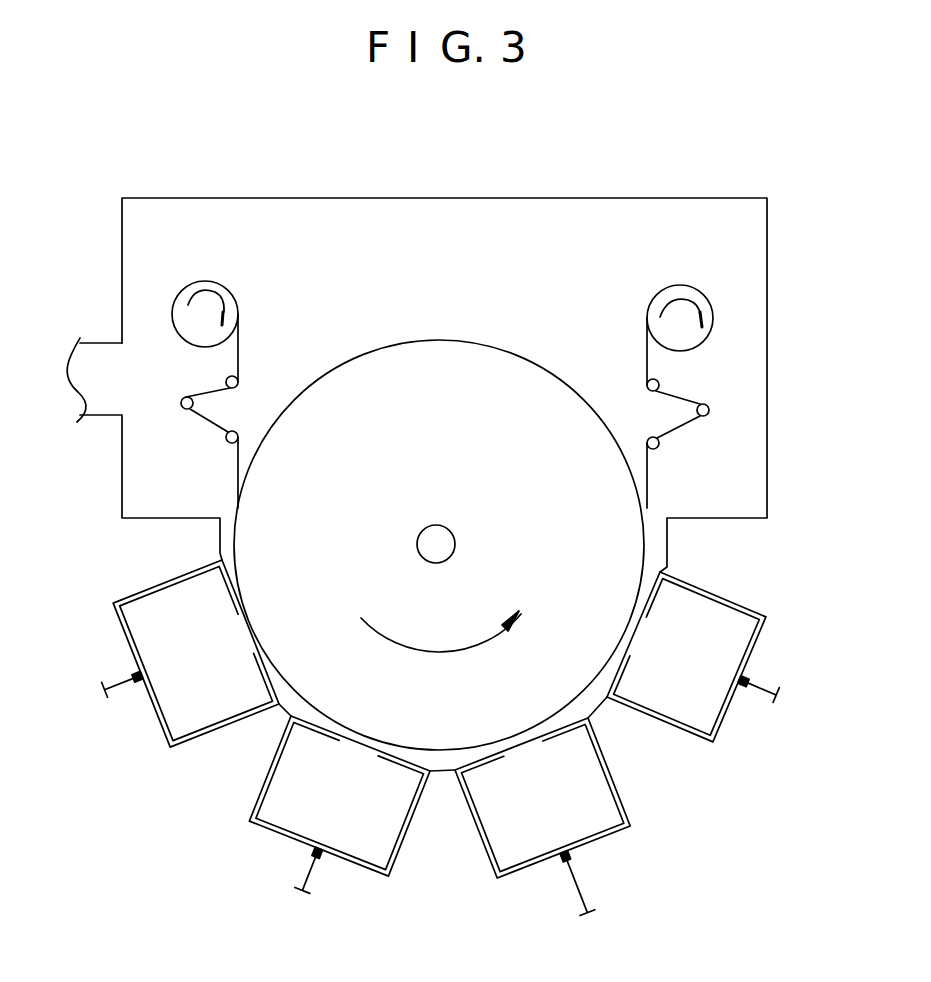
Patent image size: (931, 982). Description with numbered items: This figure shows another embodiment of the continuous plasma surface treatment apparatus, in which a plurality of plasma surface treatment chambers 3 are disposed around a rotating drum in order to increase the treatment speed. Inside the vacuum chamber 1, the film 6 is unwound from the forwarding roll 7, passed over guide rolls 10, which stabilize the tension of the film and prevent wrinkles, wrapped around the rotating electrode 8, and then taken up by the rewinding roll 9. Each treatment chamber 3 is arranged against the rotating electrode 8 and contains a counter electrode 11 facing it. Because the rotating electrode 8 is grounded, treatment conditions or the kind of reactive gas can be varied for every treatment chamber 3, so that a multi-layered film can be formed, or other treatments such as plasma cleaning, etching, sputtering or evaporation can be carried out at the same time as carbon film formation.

The vacuum chamber 1 is at (466, 198).
The plasma surface treatment chamber 3 is at (197, 733).
The film 6 is at (240, 347).
The forwarding roll 7 is at (212, 296).
The rotating electrode 8 is at (558, 378).
The rewinding roll 9 is at (695, 303).
The guide roll 10 is at (720, 407).
The counter electrode 11 is at (138, 643).